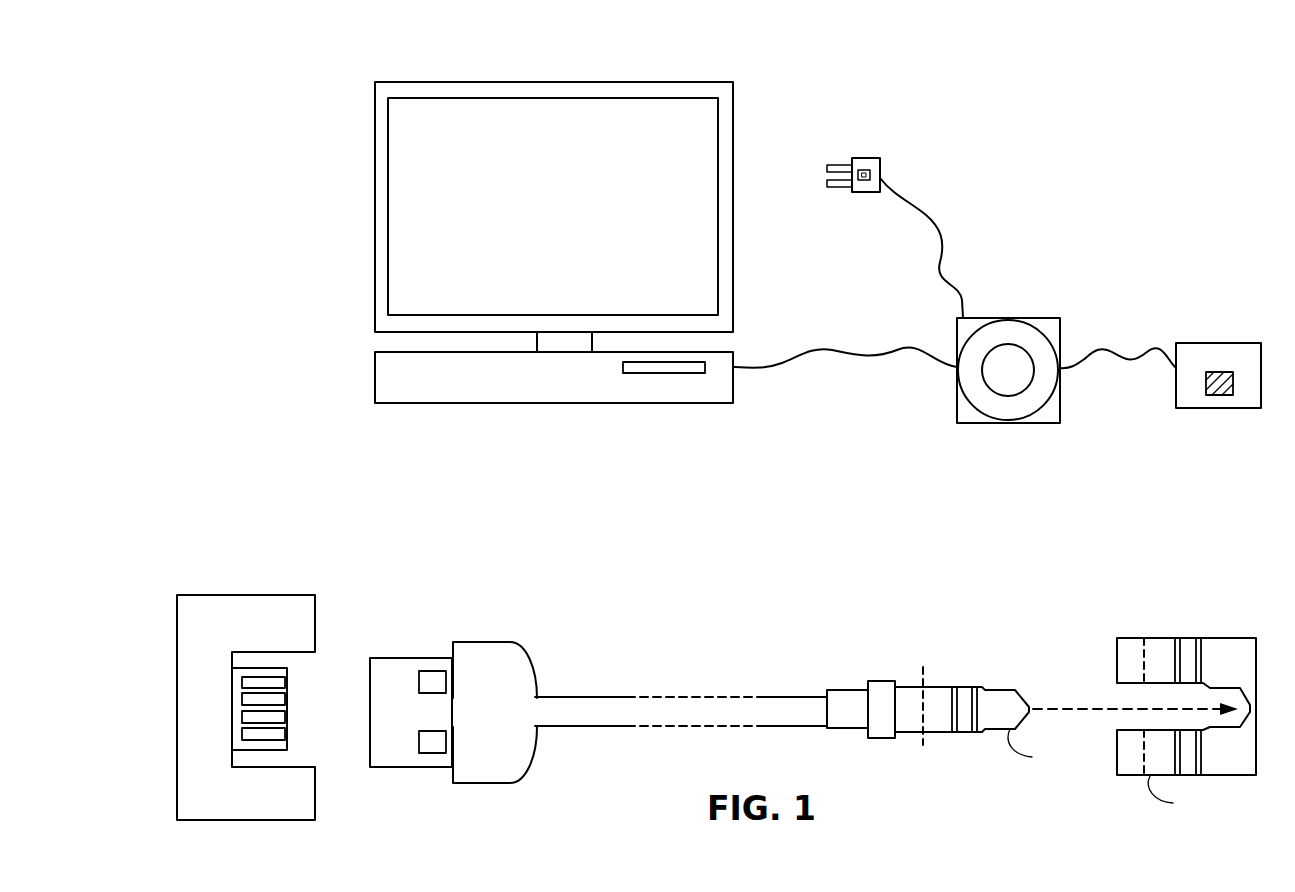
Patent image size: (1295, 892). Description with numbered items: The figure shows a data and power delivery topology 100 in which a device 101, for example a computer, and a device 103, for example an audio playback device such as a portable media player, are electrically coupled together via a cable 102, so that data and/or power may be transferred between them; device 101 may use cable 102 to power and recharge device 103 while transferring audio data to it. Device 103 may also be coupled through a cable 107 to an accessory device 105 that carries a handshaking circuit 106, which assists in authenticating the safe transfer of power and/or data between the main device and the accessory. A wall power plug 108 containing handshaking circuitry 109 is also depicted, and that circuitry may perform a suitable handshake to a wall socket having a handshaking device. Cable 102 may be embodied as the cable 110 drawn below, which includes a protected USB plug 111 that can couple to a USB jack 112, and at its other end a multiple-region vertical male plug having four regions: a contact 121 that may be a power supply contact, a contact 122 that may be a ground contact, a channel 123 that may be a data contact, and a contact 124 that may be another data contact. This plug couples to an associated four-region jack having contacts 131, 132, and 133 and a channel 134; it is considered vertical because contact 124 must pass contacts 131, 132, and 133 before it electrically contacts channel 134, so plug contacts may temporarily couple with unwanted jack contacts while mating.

The topology 100 is at (1160, 73).
The device 101 is at (376, 83).
The cable 102 is at (826, 348).
The device 103 is at (1003, 318).
The device 105 is at (1216, 343).
The handshaking circuit 106 is at (1215, 395).
The cable 107 is at (1078, 370).
The wall power plug 108 is at (858, 158).
The handshaking circuitry 109 is at (872, 174).
The cable 110 is at (617, 697).
The USB plug 111 is at (485, 633).
The USB jack 112 is at (290, 595).
The contact 121 is at (912, 686).
The contact 122 is at (938, 733).
The channel 123 is at (966, 687).
The contact 124 is at (1041, 752).
The contact 131 is at (1138, 638).
The contact 132 is at (1181, 797).
The contact 133 is at (1186, 638).
The channel 134 is at (1220, 776).